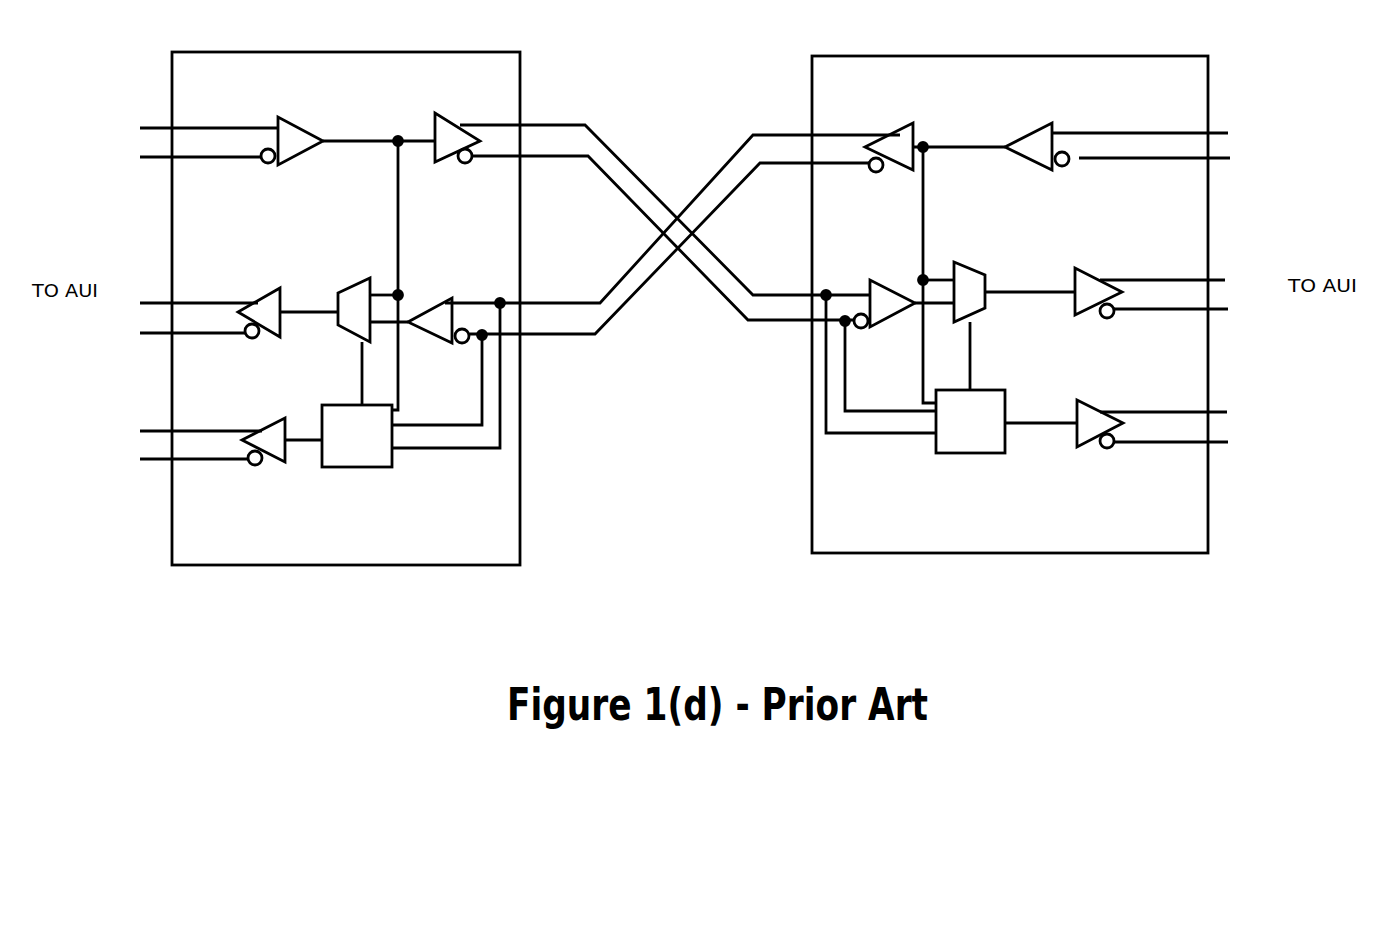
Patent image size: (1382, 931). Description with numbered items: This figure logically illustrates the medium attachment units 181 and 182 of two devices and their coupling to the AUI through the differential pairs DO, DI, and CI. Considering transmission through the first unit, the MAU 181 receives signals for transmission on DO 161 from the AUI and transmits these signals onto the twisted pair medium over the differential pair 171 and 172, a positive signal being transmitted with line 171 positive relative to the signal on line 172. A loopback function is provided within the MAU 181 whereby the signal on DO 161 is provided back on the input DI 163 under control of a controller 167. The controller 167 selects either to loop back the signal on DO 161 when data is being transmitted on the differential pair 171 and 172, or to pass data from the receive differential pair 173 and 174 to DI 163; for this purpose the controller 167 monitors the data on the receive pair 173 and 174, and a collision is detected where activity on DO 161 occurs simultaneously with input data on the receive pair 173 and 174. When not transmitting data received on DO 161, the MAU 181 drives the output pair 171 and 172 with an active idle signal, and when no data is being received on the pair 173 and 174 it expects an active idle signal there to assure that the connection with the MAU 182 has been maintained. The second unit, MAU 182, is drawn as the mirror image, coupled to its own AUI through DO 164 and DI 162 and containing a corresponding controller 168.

The medium attachment unit 181 is at (330, 308).
The medium attachment unit 182 is at (1021, 304).
The DO 161 is at (310, 139).
The DI 163 is at (322, 310).
The DO 164 is at (1047, 147).
The DI 162 is at (1025, 295).
The controller 167 is at (392, 326).
The controller 168 is at (951, 322).
The line 171 is at (665, 186).
The line 172 is at (663, 238).
The receive differential pair line 173 is at (672, 219).
The receive differential pair line 174 is at (669, 270).